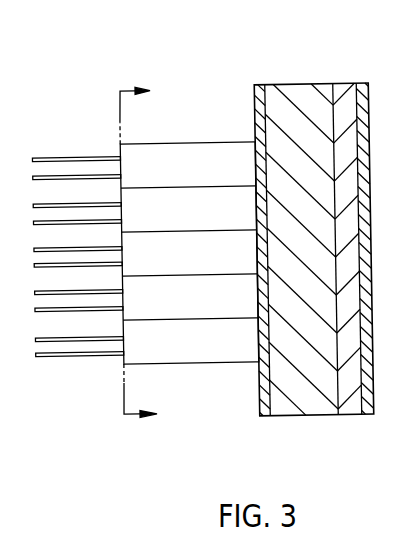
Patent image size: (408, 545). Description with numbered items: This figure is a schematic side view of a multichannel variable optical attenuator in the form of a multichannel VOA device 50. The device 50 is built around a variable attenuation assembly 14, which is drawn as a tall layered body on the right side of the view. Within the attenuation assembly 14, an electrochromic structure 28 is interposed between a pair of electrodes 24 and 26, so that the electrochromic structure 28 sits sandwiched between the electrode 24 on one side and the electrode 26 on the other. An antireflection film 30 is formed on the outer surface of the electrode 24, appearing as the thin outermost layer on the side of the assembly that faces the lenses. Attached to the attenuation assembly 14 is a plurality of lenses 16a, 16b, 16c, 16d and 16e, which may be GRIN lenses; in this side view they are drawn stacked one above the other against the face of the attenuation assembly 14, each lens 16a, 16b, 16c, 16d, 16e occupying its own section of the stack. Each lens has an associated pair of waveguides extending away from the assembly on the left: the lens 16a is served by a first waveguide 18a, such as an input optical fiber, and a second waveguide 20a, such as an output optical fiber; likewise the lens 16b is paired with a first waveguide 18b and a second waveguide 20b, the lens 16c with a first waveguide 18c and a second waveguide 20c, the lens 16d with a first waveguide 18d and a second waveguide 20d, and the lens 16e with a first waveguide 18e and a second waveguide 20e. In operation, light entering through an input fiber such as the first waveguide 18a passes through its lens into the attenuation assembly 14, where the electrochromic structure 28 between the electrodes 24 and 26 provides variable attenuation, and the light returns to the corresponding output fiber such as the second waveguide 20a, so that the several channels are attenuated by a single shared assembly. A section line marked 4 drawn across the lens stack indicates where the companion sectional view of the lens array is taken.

The multichannel VOA device 50 is at (131, 195).
The variable attenuation assembly 14 is at (316, 249).
The antireflection film 30 is at (263, 83).
The electrode 24 is at (303, 93).
The electrochromic structure 28 is at (343, 88).
The electrode 26 is at (366, 89).
The lens 16a is at (178, 177).
The lens 16b is at (178, 221).
The lens 16c is at (178, 265).
The lens 16d is at (178, 309).
The lens 16e is at (178, 353).
The first waveguide 18a is at (79, 154).
The second waveguide 20a is at (78, 176).
The first waveguide 18b is at (48, 200).
The second waveguide 20b is at (77, 221).
The first waveguide 18c is at (47, 244).
The second waveguide 20c is at (77, 264).
The first waveguide 18d is at (47, 287).
The second waveguide 20d is at (76, 308).
The first waveguide 18e is at (46, 334).
The second waveguide 20e is at (75, 353).
The section line 4- 4 is at (145, 252).